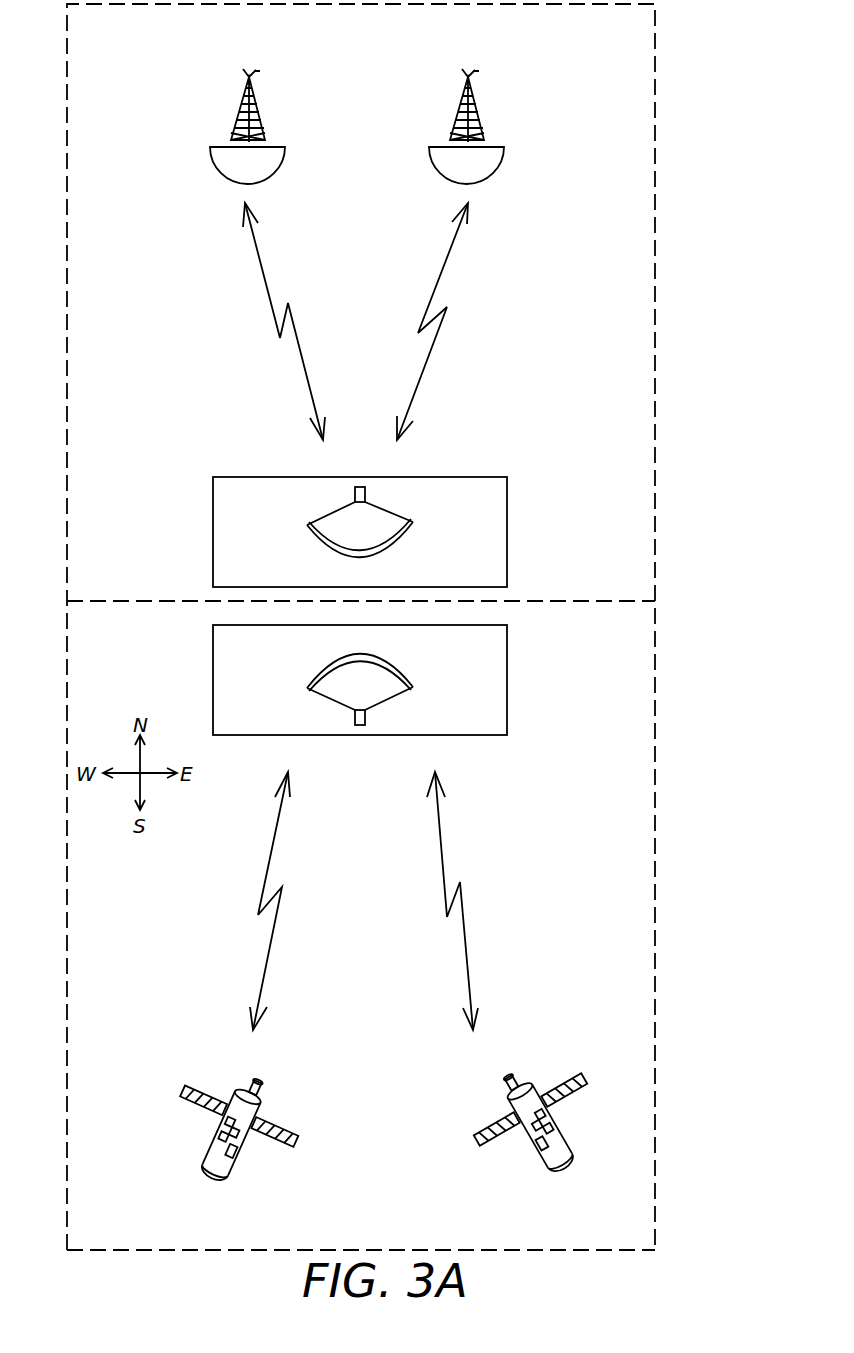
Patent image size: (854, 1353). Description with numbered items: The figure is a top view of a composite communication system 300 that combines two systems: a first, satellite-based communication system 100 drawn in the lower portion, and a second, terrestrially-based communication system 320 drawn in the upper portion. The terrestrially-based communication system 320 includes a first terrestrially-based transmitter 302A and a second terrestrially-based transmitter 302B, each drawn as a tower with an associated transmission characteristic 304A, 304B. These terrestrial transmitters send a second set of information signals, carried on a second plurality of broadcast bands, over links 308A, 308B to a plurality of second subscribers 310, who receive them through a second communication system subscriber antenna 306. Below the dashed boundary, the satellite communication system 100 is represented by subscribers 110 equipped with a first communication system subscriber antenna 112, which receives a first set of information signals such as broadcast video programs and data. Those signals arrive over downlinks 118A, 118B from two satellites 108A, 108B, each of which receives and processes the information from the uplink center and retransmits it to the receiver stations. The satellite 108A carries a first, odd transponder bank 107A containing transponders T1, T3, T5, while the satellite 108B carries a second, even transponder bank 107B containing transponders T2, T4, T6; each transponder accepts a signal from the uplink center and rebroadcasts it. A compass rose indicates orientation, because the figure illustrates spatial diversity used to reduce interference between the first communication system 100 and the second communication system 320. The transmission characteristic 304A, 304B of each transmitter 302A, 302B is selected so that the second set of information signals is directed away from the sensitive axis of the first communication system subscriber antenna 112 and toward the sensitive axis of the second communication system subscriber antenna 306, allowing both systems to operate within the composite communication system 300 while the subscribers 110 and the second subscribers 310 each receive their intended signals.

The composite communication system 300 is at (690, 117).
The terrestrially-based communication system 320 is at (652, 415).
The satellite communication system 100 is at (657, 770).
The first terrestrially-based transmitter 302A is at (477, 97).
The second terrestrially-based transmitter 302B is at (258, 97).
The transmission characteristic 304A is at (502, 170).
The transmission characteristic 304B is at (283, 170).
The link 308A is at (437, 332).
The link 308B is at (270, 297).
The second subscribers 310 is at (405, 532).
The second communication system subscriber antenna 306 is at (397, 543).
The subscribers 110 is at (407, 680).
The first communication system subscriber antenna 112 is at (315, 660).
The downlink 118A is at (440, 825).
The downlink 118B is at (268, 945).
The first (odd) transponder bank 107A is at (507, 1140).
The second (even) transponder bank 107B is at (215, 1117).
The satellite 108A is at (507, 1120).
The satellite 108B is at (252, 1142).
The transponder T1 is at (547, 1150).
The transponder T2 is at (213, 1130).
The transponder T3 is at (533, 1143).
The transponder T4 is at (220, 1127).
The transponder T5 is at (520, 1135).
The transponder T6 is at (222, 1113).